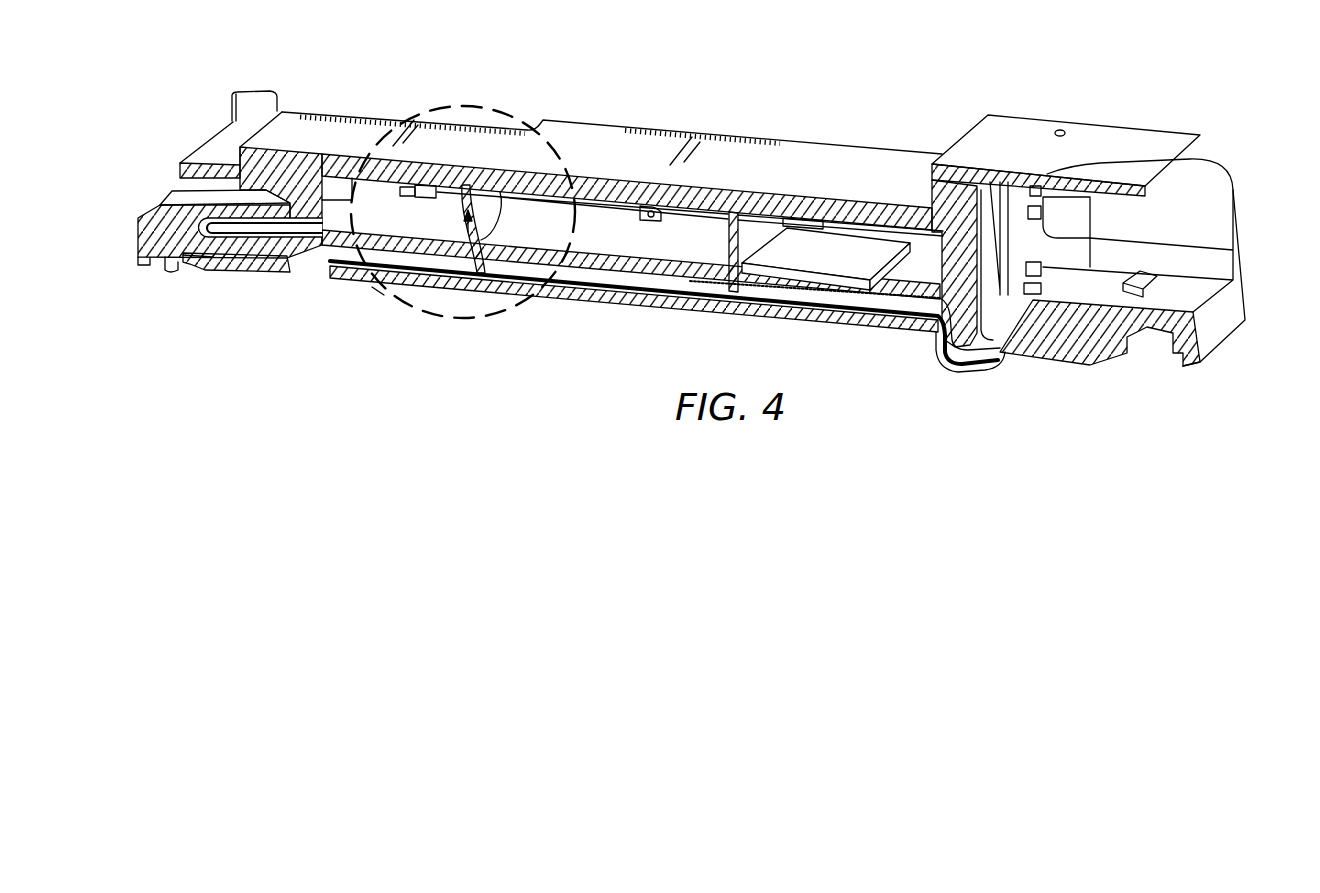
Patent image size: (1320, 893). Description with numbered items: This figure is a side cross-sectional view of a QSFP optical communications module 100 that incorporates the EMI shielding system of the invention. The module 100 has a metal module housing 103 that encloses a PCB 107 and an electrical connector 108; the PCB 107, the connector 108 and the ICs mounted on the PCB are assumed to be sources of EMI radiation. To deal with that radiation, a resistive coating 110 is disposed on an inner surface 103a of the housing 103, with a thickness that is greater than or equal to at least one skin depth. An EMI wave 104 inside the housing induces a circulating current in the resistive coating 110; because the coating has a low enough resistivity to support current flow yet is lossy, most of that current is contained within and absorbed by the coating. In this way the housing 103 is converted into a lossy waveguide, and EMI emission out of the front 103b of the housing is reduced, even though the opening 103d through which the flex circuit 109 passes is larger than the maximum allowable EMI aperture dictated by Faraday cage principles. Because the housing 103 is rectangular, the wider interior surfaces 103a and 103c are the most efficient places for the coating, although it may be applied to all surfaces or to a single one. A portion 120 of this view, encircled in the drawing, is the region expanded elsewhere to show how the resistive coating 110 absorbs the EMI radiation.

The QSFP optical communications module 100 is at (834, 70).
The module housing 103 is at (602, 142).
The inner surface of the housing 103a is at (598, 296).
The front of the module housing 103b is at (1215, 193).
The housing surface 103c is at (609, 204).
The opening in the housing 103d is at (958, 342).
The EMI wave 104 is at (490, 280).
The PCB 107 is at (281, 262).
The electrical connector 108 is at (178, 219).
The flex circuit 109 is at (907, 288).
The resistive coating 110 is at (683, 290).
The portion of the side cross-sectional view 120 is at (381, 292).